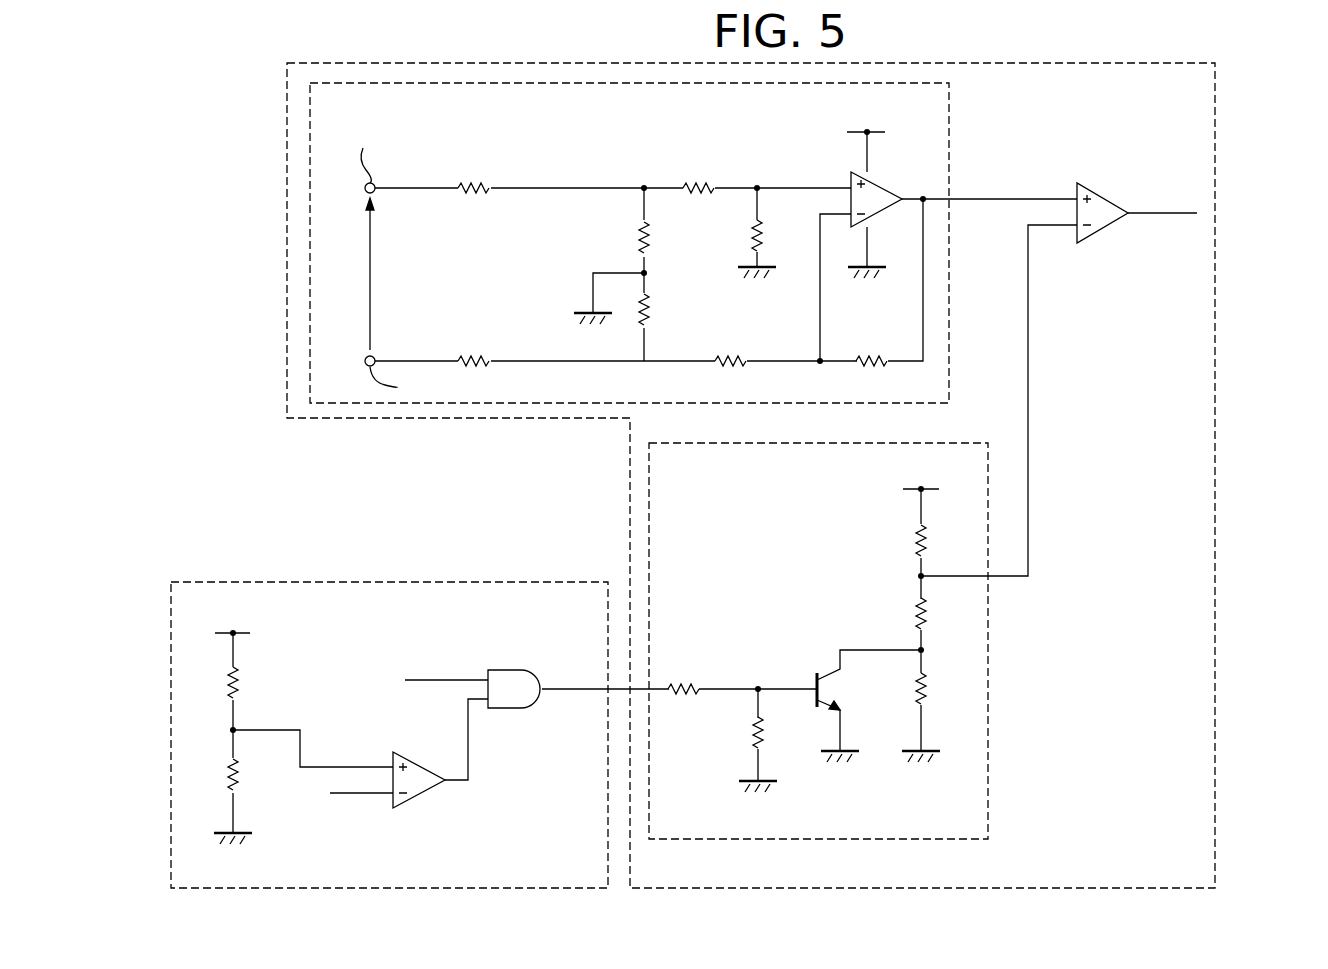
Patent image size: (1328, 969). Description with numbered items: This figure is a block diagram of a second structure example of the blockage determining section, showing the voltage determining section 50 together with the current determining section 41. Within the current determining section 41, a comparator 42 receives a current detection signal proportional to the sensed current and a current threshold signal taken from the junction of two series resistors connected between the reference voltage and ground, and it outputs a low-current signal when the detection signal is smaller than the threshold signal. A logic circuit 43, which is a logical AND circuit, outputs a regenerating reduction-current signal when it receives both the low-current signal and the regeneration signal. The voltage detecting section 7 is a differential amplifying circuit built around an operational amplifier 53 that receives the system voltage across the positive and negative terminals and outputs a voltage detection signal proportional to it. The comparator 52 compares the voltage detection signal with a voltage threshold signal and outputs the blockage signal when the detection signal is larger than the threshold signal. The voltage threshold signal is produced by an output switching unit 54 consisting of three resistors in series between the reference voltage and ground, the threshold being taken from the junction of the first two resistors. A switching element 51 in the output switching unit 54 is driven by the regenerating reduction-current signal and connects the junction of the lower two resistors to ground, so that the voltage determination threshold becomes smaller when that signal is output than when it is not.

The voltage determining section 50 is at (1215, 155).
The voltage detecting section 7 is at (949, 125).
The operational amplifier 53 is at (880, 178).
The comparator 52 is at (1103, 197).
The output switching unit 54 is at (988, 636).
The switching element 51 is at (815, 680).
The current determining section 41 is at (392, 578).
The comparator 42 is at (420, 797).
The logic circuit 43 is at (507, 670).